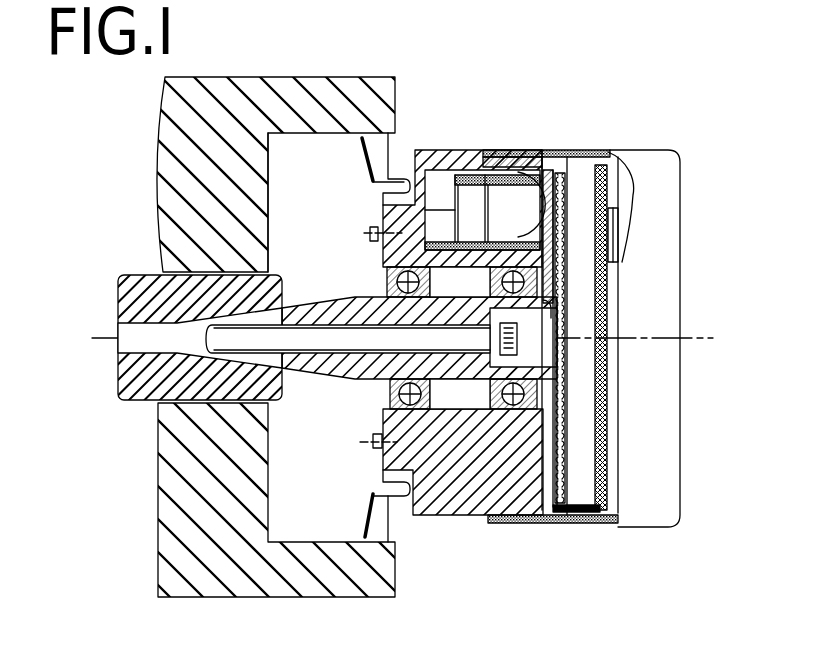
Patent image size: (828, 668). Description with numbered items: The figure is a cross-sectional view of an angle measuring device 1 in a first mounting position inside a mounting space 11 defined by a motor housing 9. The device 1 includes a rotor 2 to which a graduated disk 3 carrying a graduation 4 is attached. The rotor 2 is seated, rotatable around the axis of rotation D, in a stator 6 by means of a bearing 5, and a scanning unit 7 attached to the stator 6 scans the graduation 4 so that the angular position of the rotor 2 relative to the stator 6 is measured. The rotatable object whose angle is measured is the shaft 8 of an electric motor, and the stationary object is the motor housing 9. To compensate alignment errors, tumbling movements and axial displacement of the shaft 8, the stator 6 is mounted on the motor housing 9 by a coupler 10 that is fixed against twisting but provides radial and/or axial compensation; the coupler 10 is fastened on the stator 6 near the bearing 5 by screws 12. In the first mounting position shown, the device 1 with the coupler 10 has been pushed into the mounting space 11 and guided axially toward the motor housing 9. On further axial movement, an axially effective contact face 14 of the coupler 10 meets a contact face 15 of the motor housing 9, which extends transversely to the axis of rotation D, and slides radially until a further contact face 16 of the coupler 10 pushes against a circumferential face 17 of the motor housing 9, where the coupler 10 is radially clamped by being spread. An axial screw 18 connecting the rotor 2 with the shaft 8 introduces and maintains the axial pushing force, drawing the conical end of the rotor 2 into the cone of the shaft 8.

The angle measuring device 1 is at (674, 530).
The rotor 2 is at (567, 327).
The graduated disk 3 is at (557, 173).
The graduation 4 is at (567, 258).
The bearing 5 is at (463, 398).
The stator 6 is at (527, 495).
The scanning unit 7 is at (567, 208).
The shaft 8 is at (120, 380).
The motor housing 9 is at (382, 568).
The coupler 10 is at (383, 207).
The mounting space 11 is at (397, 147).
The screws 12 is at (371, 233).
The contact face 14 is at (348, 147).
The contact face 15 is at (292, 148).
The further contact face 16 is at (368, 142).
The circumferential face 17 is at (300, 537).
The axial screw 18 is at (520, 352).
The axis of rotation D is at (106, 340).